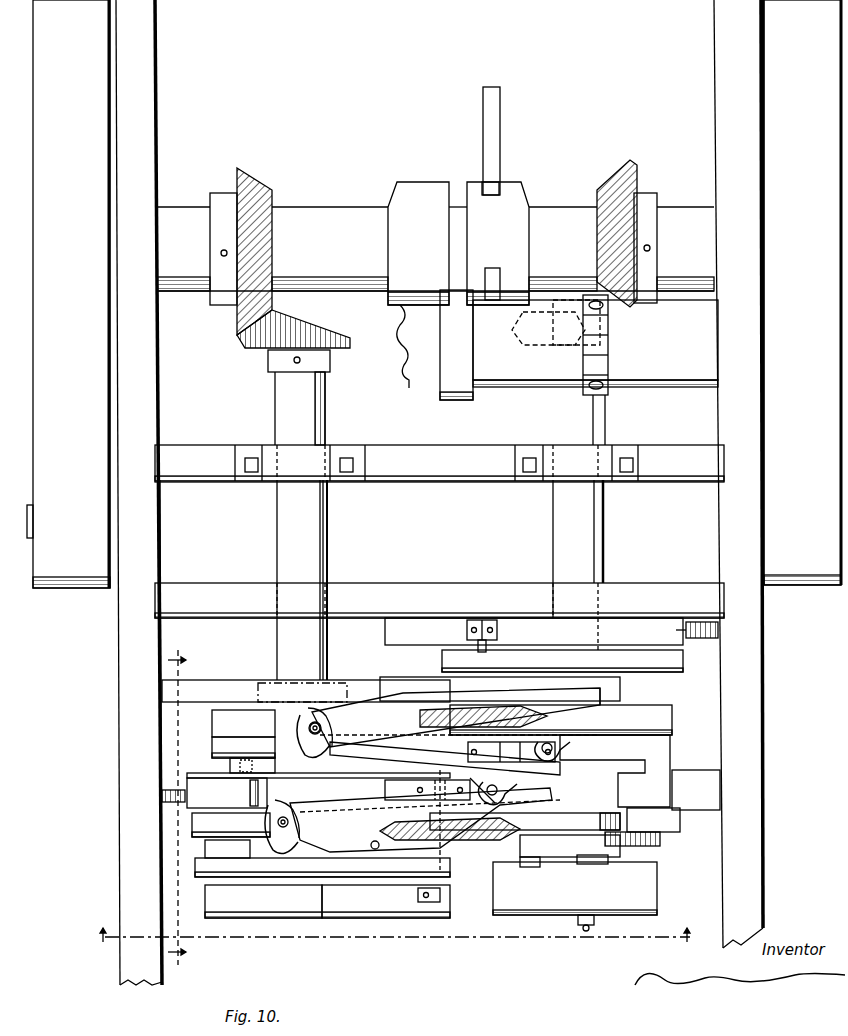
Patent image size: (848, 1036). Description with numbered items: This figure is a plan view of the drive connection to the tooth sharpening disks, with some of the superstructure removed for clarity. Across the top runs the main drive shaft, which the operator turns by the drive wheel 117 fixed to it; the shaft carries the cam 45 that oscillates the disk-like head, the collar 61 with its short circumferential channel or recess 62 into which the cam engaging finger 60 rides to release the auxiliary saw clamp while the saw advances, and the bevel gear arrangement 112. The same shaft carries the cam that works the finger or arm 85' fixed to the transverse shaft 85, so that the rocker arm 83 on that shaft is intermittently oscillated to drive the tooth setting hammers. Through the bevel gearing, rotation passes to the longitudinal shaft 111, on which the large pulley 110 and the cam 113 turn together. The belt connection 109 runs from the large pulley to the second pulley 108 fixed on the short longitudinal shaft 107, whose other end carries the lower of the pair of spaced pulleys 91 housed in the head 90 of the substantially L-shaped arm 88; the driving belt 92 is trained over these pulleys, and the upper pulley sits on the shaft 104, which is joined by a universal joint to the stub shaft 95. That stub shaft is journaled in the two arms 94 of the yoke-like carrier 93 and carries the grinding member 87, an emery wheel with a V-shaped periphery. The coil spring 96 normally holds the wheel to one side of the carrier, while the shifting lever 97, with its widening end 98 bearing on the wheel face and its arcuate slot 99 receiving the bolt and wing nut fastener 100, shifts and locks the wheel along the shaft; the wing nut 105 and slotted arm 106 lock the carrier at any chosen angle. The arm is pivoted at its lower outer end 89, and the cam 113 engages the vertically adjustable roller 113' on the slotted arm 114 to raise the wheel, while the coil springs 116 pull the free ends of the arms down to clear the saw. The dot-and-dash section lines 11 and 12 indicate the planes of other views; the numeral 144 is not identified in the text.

The drive wheel 117 is at (68, 294).
The main shaft 144 is at (326, 210).
The cam 45 is at (417, 190).
The cam engaging finger 60 is at (500, 128).
The collar 61 is at (516, 192).
The channel or recess 62 is at (500, 282).
The bevel gear arrangement 112 is at (243, 341).
The finger or arm 85' is at (456, 345).
The transverse shaft 85 is at (595, 356).
The rocker arm 83 is at (610, 357).
The longitudinal shaft 111 is at (328, 538).
The section line 12 is at (178, 808).
The section line 11 is at (397, 935).
The shaft 104 is at (497, 640).
The coil springs 116 is at (150, 796).
The driving belt 92 is at (574, 660).
The pulleys 91 is at (684, 672).
The head 90 is at (622, 688).
The second pulley 108 is at (672, 705).
The belt connection 109 is at (693, 812).
The shifting lever 97 is at (388, 700).
The grinding members 87 is at (410, 738).
The stub shaft 95 is at (501, 698).
The arcuate slot 99 is at (325, 727).
The yoke-like carrier 93 is at (450, 764).
The arms 94 is at (470, 771).
The coil spring 96 is at (430, 810).
The slotted arm 106 is at (555, 748).
The wing nut 105 is at (505, 780).
The bolt and wing nut fastener 100 is at (305, 728).
The large pulley 110 is at (693, 836).
The cam 113 is at (442, 812).
The slotted arm 114 is at (297, 785).
The roller 113' is at (387, 831).
The short longitudinal shaft 107 is at (205, 853).
The widening end 98 is at (470, 860).
The lower outer ends 89 is at (575, 888).
The L-shaped arms 88 is at (660, 889).